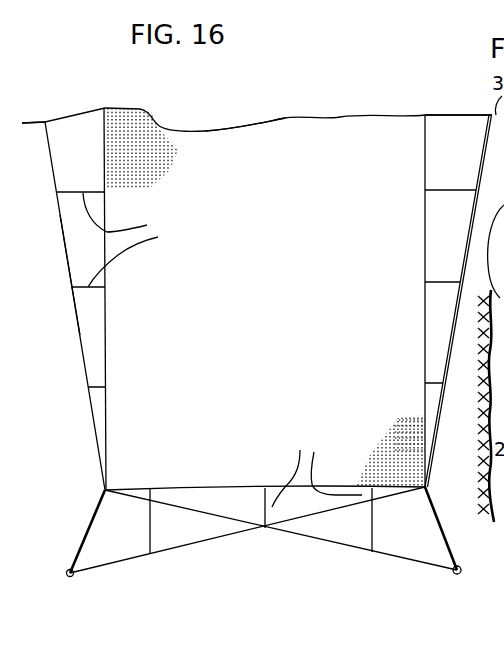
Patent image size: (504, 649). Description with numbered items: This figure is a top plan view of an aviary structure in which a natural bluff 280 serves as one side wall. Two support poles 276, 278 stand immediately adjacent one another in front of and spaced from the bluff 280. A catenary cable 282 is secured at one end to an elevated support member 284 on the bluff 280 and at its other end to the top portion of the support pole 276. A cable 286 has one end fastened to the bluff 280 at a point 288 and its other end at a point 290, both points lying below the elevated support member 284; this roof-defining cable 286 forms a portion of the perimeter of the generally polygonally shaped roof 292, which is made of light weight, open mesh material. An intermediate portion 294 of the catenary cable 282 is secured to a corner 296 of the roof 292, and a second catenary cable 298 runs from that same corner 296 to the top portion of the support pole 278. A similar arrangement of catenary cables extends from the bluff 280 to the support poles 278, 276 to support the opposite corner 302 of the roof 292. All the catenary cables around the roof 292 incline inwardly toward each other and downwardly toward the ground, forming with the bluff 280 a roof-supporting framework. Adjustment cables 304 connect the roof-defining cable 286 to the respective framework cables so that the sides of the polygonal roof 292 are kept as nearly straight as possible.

The support pole 276 is at (70, 577).
The support pole 278 is at (447, 575).
The bluff 280 is at (285, 117).
The catenary cable 282 is at (75, 323).
The elevated support member 284 is at (45, 122).
The cable 286 is at (220, 488).
The point 288 is at (105, 108).
The point 290 is at (423, 111).
The roof 292 is at (281, 276).
The intermediate portion 294 is at (103, 490).
The corner 296 is at (107, 487).
The second catenary cable 298 is at (317, 542).
The corner 302 is at (425, 487).
The adjustment cables 304 is at (222, 350).